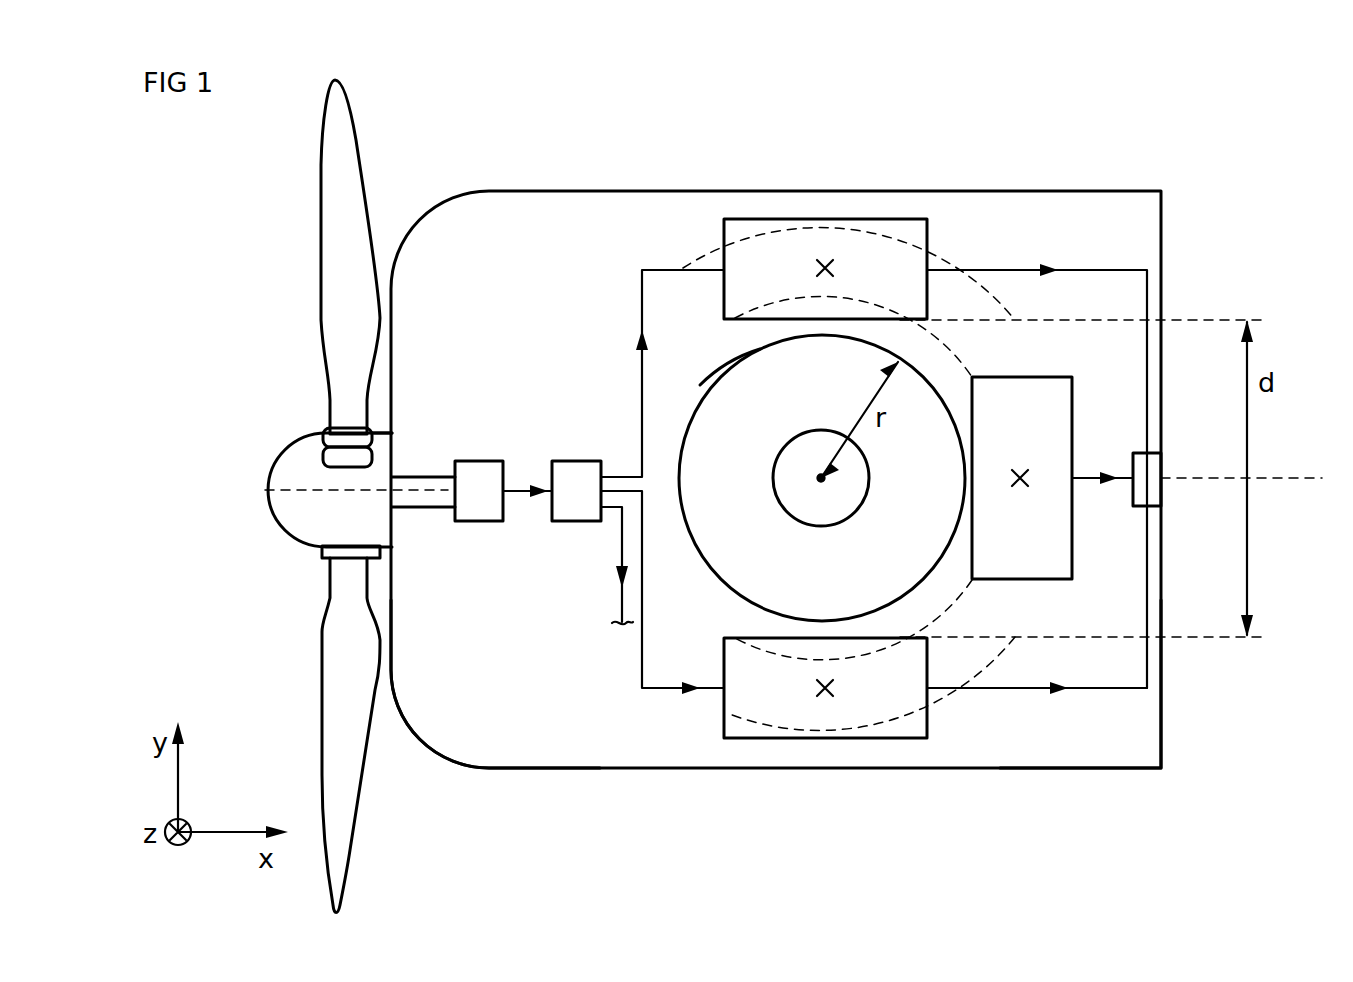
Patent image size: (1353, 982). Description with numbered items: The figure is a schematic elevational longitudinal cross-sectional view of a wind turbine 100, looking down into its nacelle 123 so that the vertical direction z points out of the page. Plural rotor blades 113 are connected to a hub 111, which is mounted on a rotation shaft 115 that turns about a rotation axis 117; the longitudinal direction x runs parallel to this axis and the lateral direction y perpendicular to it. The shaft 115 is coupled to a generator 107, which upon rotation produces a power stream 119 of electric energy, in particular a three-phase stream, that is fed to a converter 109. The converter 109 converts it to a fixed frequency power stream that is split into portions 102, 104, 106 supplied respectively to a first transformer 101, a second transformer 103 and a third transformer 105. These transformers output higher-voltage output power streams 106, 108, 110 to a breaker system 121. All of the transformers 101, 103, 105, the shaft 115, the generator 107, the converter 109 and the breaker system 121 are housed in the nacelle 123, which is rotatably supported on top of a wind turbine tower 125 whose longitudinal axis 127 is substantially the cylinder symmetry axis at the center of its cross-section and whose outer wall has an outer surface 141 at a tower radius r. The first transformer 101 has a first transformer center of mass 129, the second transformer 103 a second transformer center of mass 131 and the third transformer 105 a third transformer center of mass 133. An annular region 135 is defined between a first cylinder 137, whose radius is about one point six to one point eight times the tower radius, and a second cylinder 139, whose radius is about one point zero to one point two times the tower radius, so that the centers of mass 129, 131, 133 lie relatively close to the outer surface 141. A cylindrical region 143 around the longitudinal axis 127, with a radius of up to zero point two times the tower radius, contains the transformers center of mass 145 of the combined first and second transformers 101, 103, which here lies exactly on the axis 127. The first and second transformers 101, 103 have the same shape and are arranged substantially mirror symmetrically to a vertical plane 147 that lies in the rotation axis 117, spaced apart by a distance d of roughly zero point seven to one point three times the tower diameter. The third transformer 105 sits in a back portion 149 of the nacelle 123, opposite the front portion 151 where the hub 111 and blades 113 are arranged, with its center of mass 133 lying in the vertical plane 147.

The wind turbine 100 is at (1148, 104).
The first transformer 101 is at (722, 242).
The portion 102 is at (636, 350).
The second transformer 103 is at (722, 728).
The portion 104 is at (684, 682).
The third transformer 105 is at (1063, 377).
The portion 106 is at (618, 585).
The generator 107 is at (478, 461).
The output power stream 108 is at (1060, 705).
The converter 109 is at (578, 461).
The output power stream 110 is at (1098, 476).
The hub 111 is at (268, 492).
The rotor blades 113 is at (328, 256).
The rotation shaft 115 is at (432, 510).
The rotation axis 117 is at (300, 490).
The power stream 119 is at (528, 497).
The breaker system 121 is at (1155, 465).
The nacelle 123 is at (1052, 191).
The wind turbine tower 125 is at (700, 562).
The longitudinal axis 127 is at (818, 475).
The first transformer center of mass 129 is at (836, 268).
The second transformer center of mass 131 is at (836, 688).
The third transformer center of mass 133 is at (1020, 472).
The annular region 135 is at (908, 292).
The first cylinder 137 is at (883, 232).
The second cylinder 139 is at (793, 298).
The outer surface 141 is at (718, 378).
The cylindrical region 143 is at (862, 480).
The transformers center of mass 145 is at (820, 488).
The vertical plane 147 is at (1283, 478).
The back portion 149 is at (1062, 805).
The front portion 151 is at (452, 792).